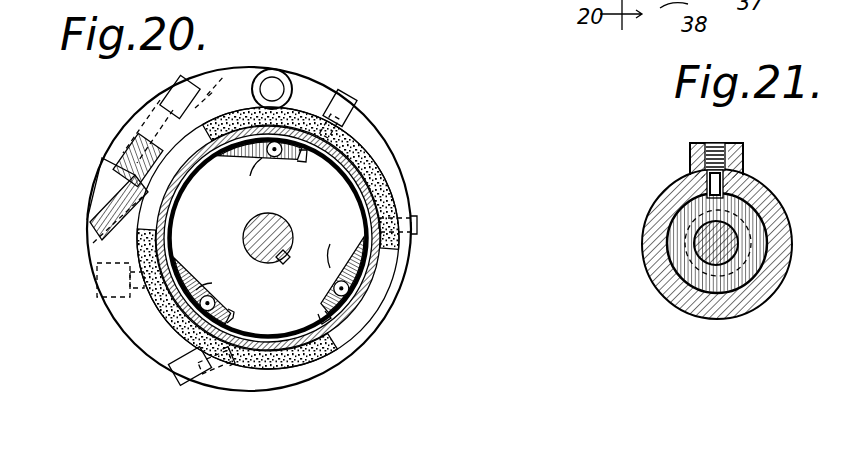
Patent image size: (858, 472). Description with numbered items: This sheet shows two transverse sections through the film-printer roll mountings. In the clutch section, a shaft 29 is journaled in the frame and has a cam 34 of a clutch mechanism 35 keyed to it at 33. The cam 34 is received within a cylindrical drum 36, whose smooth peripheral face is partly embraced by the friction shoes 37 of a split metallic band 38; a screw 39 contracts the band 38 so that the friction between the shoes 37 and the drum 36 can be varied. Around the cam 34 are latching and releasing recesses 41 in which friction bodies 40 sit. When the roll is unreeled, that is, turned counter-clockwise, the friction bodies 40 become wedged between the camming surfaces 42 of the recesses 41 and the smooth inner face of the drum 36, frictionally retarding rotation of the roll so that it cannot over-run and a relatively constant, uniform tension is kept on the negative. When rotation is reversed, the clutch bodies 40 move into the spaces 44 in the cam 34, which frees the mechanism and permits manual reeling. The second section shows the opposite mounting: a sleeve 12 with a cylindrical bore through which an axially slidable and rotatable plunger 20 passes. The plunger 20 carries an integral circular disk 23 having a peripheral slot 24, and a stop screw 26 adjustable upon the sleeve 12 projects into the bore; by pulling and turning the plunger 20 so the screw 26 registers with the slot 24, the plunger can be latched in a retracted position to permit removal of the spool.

In FIG. 21, the sleeve 12 is at (752, 293).
In FIG. 21, the plunger 20 is at (720, 246).
In FIG. 21, the circular disk 23 is at (750, 215).
In FIG. 21, the slot 24 is at (752, 194).
In FIG. 21, the stop screw 26 is at (716, 150).
In FIG. 20, the shaft 29 is at (277, 230).
In FIG. 20, the key 33 is at (286, 269).
In FIG. 20, the cam 34 is at (268, 238).
In FIG. 20, the clutch mechanism 35 is at (422, 212).
In FIG. 20, the cylindrical drum 36 is at (370, 267).
In FIG. 20, the friction shoes 37 is at (360, 150).
In FIG. 20, the split metallic band 38 is at (323, 92).
In FIG. 20, the screw 39 is at (130, 162).
In FIG. 20, the friction bodies 40 is at (280, 158).
In FIG. 20, the latching and releasing recesses 41 is at (240, 153).
In FIG. 20, the camming surfaces 42 is at (304, 158).
In FIG. 20, the spaces 44 is at (262, 160).